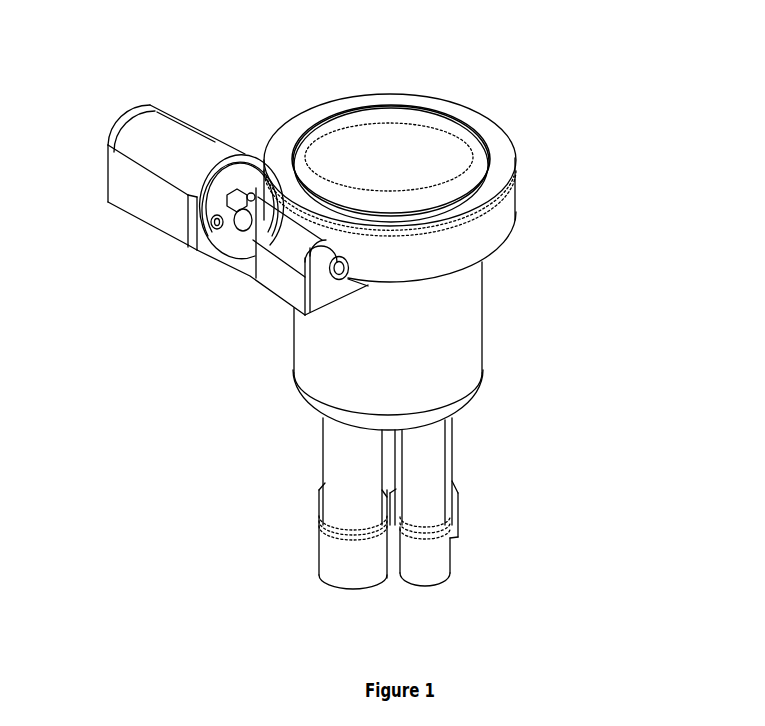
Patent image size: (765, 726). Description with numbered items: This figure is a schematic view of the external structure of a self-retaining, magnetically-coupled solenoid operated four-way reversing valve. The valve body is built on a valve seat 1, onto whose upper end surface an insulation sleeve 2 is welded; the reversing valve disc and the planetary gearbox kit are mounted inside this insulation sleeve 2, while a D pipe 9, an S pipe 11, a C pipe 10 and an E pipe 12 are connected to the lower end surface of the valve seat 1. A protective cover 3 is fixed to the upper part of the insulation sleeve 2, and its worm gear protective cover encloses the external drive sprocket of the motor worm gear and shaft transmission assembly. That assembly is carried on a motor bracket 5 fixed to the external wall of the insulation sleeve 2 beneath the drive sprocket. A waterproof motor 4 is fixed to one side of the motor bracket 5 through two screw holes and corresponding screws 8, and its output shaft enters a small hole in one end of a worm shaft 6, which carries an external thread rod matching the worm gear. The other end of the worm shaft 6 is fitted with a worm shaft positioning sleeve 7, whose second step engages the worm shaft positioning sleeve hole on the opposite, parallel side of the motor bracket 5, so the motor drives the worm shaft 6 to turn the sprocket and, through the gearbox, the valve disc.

The valve seat 1 is at (484, 390).
The insulation sleeve 2 is at (412, 350).
The protective cover 3 is at (290, 236).
The waterproof motor 4 is at (147, 207).
The motor bracket 5 is at (262, 215).
The worm shaft 6 is at (256, 188).
The worm shaft positioning sleeve 7 is at (300, 277).
The screws 8 is at (221, 205).
The D pipe 9 is at (432, 563).
The C pipe 10 is at (348, 541).
The S pipe 11 is at (318, 488).
The E pipe 12 is at (460, 481).